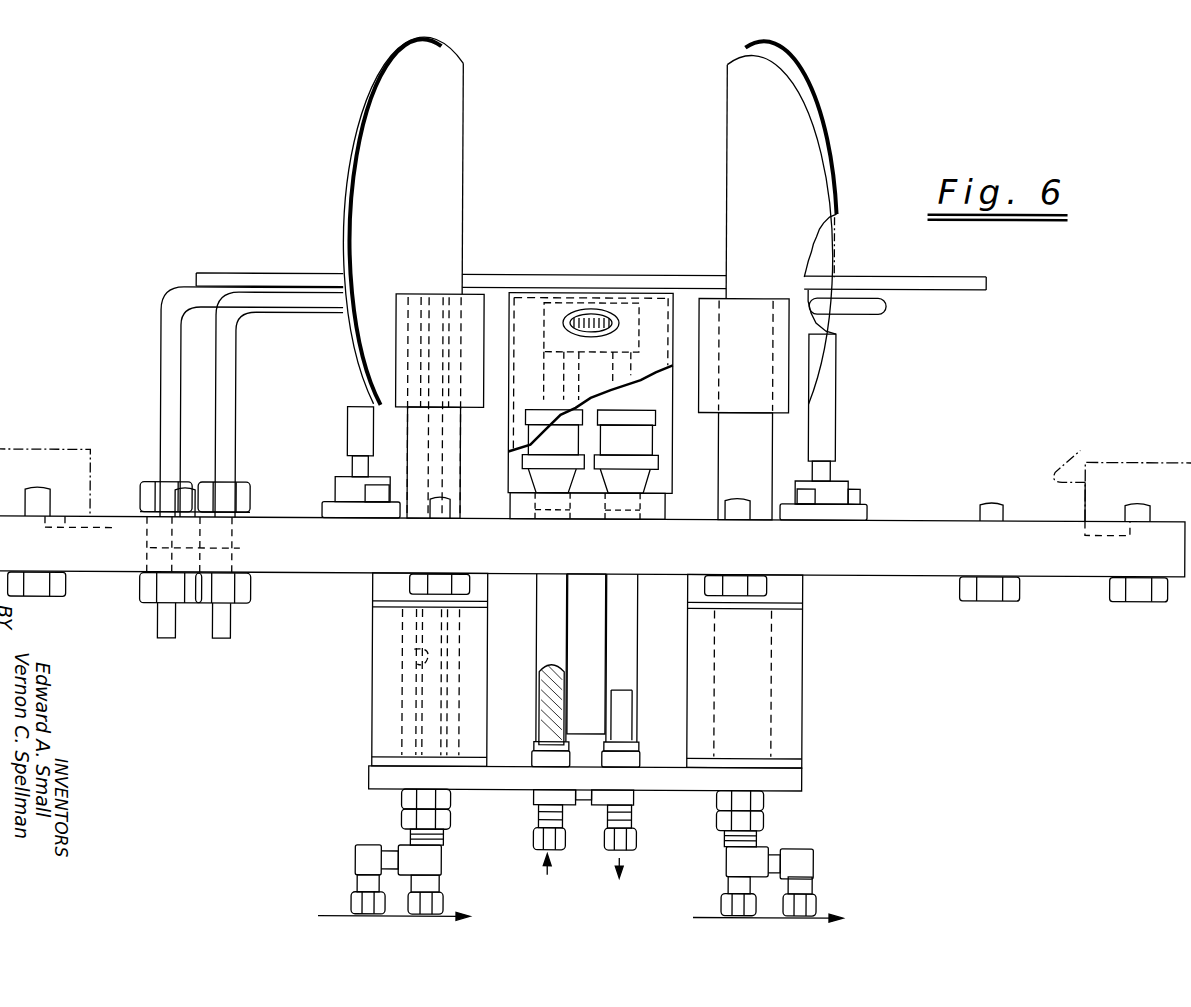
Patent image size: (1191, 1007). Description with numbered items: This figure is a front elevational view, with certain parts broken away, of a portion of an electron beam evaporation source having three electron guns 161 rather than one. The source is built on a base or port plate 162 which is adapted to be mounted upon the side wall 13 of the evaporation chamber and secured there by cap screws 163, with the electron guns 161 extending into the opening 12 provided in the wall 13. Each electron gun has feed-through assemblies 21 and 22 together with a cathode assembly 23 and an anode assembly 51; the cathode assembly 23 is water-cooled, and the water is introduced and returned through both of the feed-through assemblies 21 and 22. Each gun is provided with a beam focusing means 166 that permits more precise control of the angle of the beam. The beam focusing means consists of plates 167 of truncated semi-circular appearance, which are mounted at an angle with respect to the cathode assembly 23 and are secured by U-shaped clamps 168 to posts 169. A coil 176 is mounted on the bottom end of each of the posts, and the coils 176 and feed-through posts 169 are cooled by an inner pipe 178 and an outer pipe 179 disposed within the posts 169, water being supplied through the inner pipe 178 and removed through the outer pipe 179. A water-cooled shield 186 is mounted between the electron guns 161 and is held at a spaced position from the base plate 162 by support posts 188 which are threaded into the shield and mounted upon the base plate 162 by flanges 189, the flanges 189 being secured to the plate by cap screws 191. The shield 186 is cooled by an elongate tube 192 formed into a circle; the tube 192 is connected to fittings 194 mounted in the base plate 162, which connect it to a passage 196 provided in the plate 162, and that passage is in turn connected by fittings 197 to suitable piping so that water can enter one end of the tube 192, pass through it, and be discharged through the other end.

The opening 12 is at (1082, 450).
The side wall 13 is at (1113, 462).
The feed-through assembly 21 is at (540, 636).
The feed-through assembly 22 is at (636, 650).
The cathode assembly 23 is at (599, 374).
The anode assembly 51 is at (646, 316).
The electron gun 161 is at (578, 221).
The base or port plate 162 is at (322, 580).
The cap screws 163 is at (182, 494).
The beam focusing means 166 is at (330, 203).
The plates 167 is at (440, 178).
The U-shaped clamps 168 is at (478, 292).
The posts 169 is at (487, 430).
The coil 176 is at (382, 716).
The inner pipe 178 is at (425, 650).
The outer pipe 179 is at (415, 680).
The water-cooled shield 186 is at (990, 281).
The support posts 188 is at (352, 414).
The flanges 189 is at (340, 509).
The cap screws 191 is at (388, 480).
The elongate tube 192 is at (170, 376).
The fittings 194 is at (145, 493).
The passage 196 is at (150, 548).
The fittings 197 is at (150, 588).